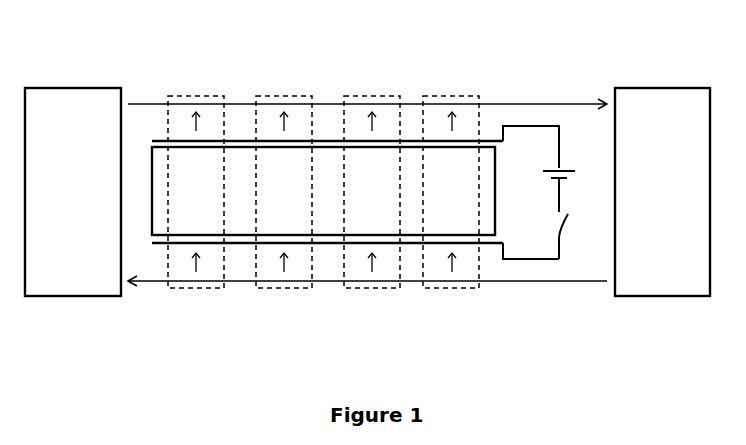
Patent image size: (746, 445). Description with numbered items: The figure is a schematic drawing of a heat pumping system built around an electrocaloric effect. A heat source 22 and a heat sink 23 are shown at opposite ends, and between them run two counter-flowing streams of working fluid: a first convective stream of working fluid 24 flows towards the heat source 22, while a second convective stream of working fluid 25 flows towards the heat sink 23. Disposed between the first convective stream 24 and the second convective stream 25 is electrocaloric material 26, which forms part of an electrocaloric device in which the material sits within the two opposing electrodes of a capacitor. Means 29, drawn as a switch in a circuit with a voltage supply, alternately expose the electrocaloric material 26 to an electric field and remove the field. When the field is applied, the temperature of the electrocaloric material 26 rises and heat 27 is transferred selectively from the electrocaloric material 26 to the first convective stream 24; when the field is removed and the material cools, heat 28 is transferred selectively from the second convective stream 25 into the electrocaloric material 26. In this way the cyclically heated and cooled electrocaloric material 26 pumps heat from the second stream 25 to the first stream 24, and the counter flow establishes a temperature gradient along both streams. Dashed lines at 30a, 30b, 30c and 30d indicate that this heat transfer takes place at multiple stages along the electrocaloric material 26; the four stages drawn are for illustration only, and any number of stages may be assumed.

The heat source 22 is at (638, 88).
The heat sink 23 is at (86, 86).
The first convective stream of working fluid 24 is at (539, 102).
The second convective stream of working fluid 25 is at (535, 283).
The electrocaloric material 26 is at (152, 178).
The heat 27 is at (370, 128).
The heat 28 is at (372, 265).
The means for alternatively exposing ECM to an electric field 29 is at (578, 229).
The stage 30a is at (212, 288).
The stage 30b is at (298, 288).
The stage 30c is at (383, 288).
The stage 30d is at (438, 288).